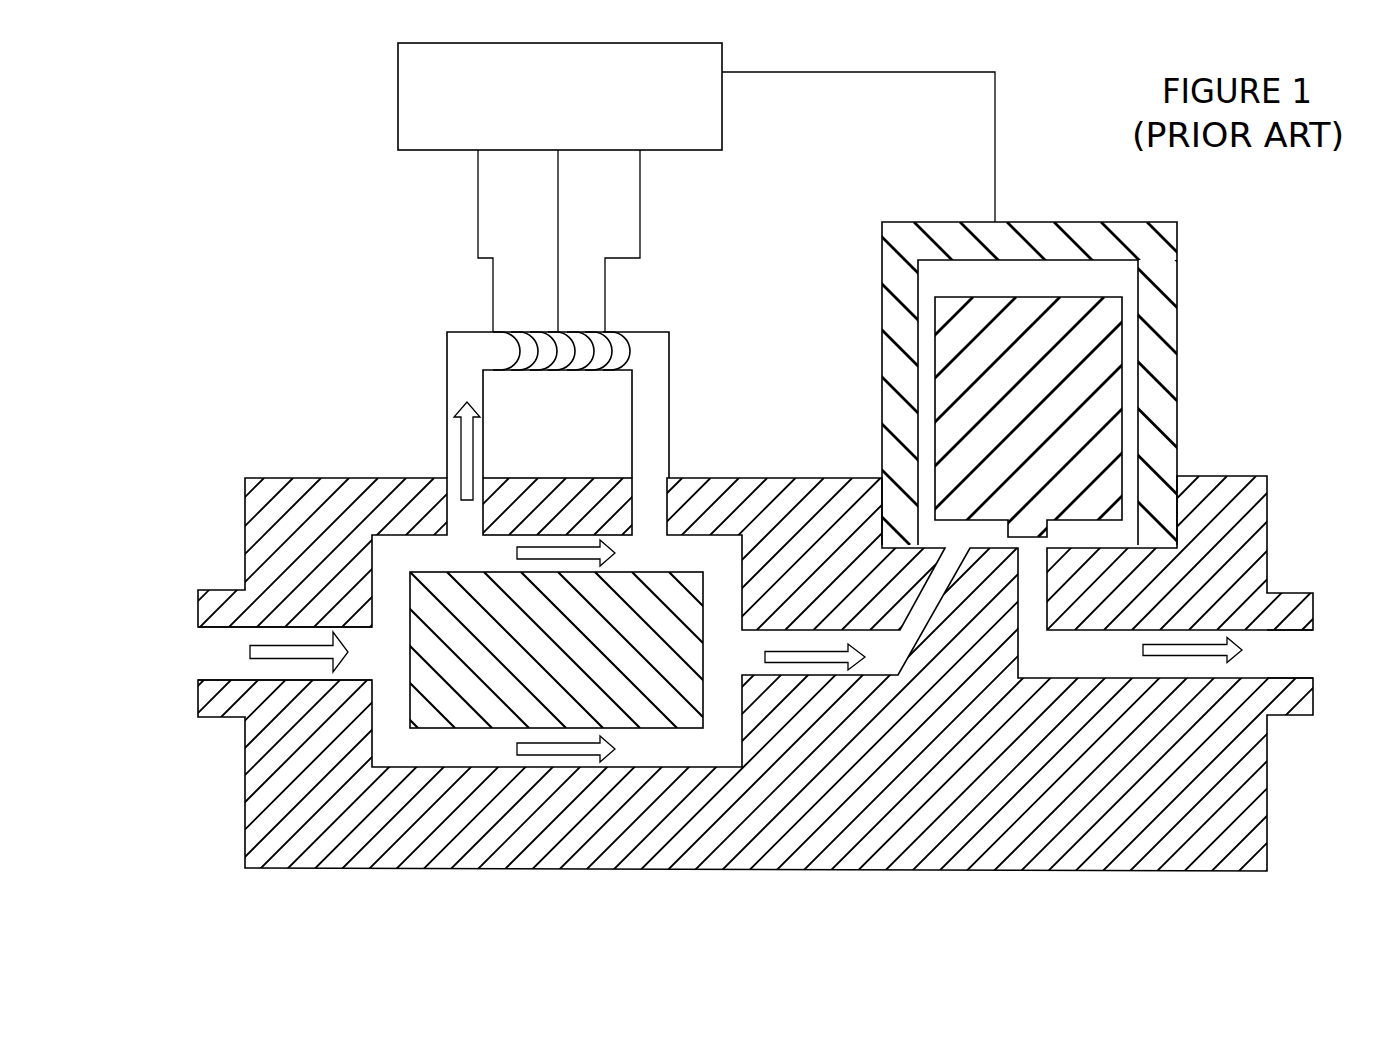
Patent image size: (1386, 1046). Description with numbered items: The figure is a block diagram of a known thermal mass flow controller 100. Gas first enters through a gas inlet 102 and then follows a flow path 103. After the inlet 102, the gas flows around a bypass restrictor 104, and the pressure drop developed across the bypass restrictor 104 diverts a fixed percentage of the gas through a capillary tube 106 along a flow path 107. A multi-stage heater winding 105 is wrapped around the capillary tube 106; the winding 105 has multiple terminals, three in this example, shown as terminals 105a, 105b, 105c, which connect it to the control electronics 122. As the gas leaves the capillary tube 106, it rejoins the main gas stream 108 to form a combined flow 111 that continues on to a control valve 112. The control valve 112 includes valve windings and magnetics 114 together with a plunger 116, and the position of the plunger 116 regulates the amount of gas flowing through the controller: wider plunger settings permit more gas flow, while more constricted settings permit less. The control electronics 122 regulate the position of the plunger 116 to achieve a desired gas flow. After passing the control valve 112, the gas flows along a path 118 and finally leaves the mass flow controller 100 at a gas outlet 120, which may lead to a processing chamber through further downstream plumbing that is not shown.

The thermal mass flow controller 100 is at (268, 150).
The gas inlet 102 is at (185, 664).
The flow path 103 is at (300, 636).
The bypass restrictor 104 is at (632, 568).
The multi-stage heater winding 105 is at (589, 326).
The terminal 105a is at (477, 228).
The terminal 105b is at (560, 247).
The terminal 105c is at (641, 237).
The capillary tube 106 is at (444, 367).
The flow path 107 is at (458, 446).
The main gas stream 108 is at (567, 543).
The combined flow 111 is at (815, 668).
The control valve 112 is at (841, 210).
The valve windings and magnetics 114 is at (1184, 258).
The plunger 116 is at (1125, 362).
The path 118 is at (1193, 662).
The gas outlet 120 is at (1323, 637).
The control electronics 122 is at (722, 123).